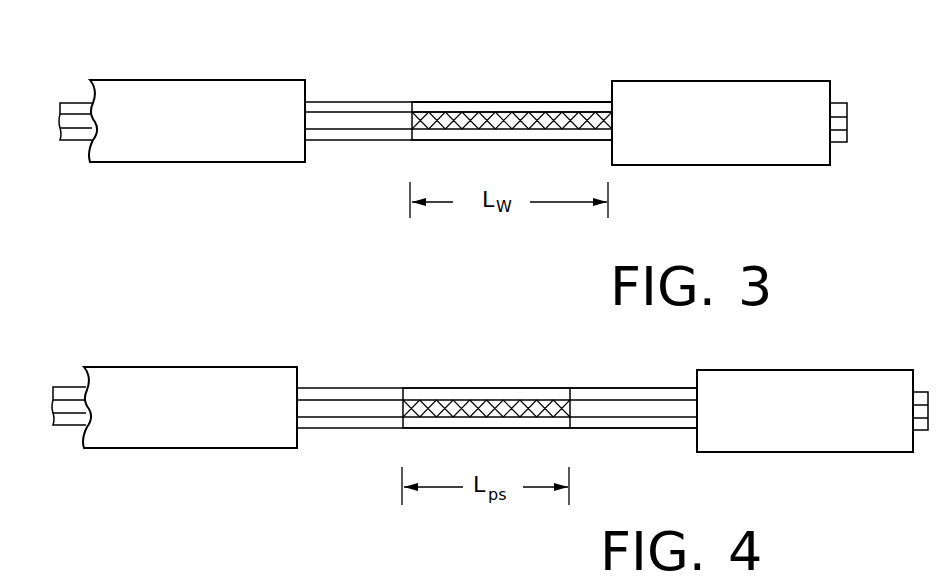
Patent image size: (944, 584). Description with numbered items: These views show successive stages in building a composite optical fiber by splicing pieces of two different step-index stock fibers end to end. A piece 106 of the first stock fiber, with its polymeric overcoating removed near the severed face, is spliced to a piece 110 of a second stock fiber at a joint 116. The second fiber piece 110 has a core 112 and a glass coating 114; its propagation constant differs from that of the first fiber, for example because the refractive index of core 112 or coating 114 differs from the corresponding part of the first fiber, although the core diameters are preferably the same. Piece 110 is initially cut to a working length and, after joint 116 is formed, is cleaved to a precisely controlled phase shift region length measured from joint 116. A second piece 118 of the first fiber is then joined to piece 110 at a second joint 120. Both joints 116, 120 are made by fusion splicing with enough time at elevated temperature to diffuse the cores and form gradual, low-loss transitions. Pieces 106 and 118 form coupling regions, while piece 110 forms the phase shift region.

In FIG. 3, the piece of first stock optical fiber 106 is at (377, 93).
In FIG. 4, the piece of first stock optical fiber 106 is at (370, 378).
In FIG. 3, the piece of second stock fiber 110 is at (582, 97).
In FIG. 4, the piece of second stock fiber 110 is at (515, 383).
In FIG. 3, the core 112 is at (465, 122).
In FIG. 4, the core 112 is at (486, 408).
In FIG. 3, the coating 114 is at (443, 101).
In FIG. 3, the joint 116 is at (411, 132).
In FIG. 4, the joint 116 is at (403, 428).
In FIG. 4, the second piece of first fiber 118 is at (594, 386).
In FIG. 4, the second joint 120 is at (570, 428).